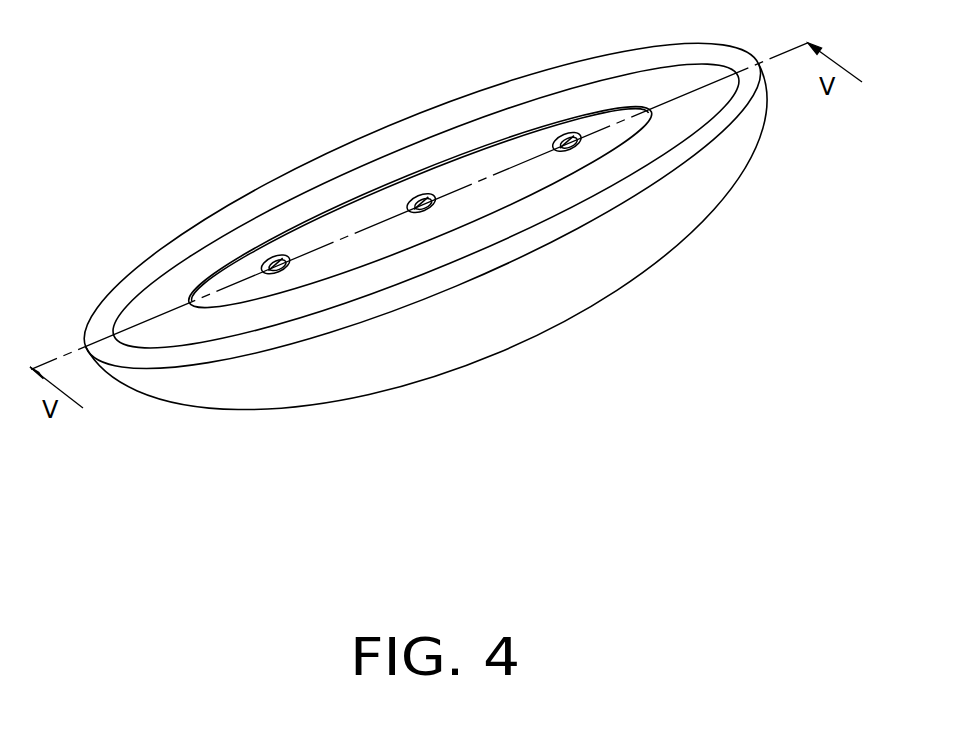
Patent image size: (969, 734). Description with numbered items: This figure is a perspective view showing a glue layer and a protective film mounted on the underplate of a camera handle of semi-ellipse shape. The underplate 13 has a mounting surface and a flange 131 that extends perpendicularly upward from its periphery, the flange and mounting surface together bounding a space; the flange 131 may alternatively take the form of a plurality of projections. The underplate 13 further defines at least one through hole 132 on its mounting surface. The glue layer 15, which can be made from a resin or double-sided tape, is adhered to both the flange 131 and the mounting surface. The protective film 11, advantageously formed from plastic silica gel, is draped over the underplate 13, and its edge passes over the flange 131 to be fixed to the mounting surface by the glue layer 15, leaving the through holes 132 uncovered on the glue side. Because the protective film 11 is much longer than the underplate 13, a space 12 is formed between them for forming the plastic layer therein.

The protective film 11 is at (240, 252).
The space 12 is at (530, 298).
The underplate 13 is at (567, 133).
The flange 131 is at (140, 295).
The through hole 132 is at (423, 195).
The glue layer 15 is at (274, 254).